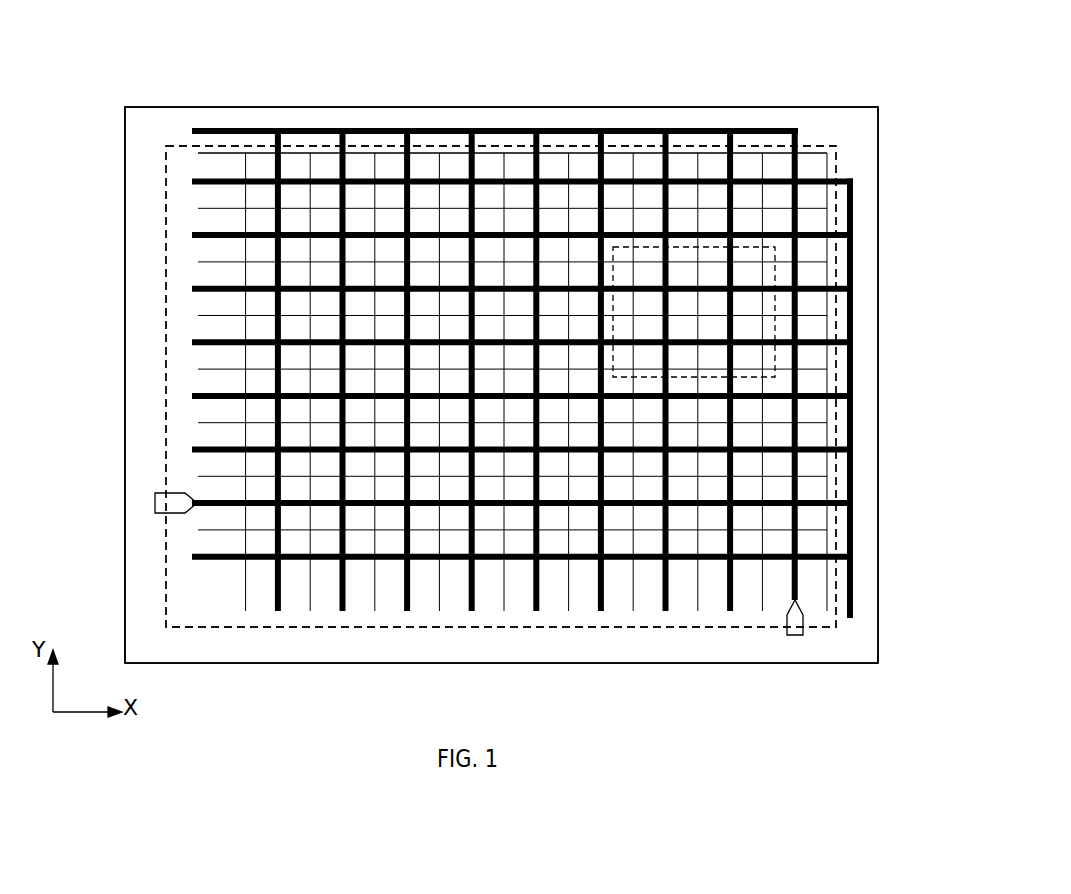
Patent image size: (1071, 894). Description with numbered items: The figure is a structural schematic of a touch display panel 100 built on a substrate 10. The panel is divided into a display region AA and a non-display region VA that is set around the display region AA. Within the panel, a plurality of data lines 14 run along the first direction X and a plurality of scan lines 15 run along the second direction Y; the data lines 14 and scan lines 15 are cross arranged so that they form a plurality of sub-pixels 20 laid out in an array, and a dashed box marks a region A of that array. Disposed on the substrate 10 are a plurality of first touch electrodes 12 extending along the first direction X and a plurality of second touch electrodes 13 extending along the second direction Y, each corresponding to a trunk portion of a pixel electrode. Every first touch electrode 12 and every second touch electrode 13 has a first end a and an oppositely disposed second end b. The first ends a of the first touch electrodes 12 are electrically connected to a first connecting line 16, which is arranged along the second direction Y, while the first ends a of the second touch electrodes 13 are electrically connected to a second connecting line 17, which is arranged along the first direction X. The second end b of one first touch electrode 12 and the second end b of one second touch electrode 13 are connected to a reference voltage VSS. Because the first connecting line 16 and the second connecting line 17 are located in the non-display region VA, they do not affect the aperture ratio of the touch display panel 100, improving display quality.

The touch display panel 100 is at (137, 56).
The substrate 10 is at (323, 107).
The non-display region VA is at (237, 123).
The display region AA is at (173, 163).
The data lines 14 is at (813, 148).
The scan lines 15 is at (827, 173).
The first connecting line 16 is at (853, 207).
The second connecting line 17 is at (390, 128).
The first touch electrodes 12 is at (213, 181).
The second touch electrodes 13 is at (273, 250).
The sub-pixels 20 is at (782, 166).
The region A is at (775, 273).
The reference voltage VSS is at (474, 579).
The first end a is at (835, 315).
The second end b is at (510, 536).